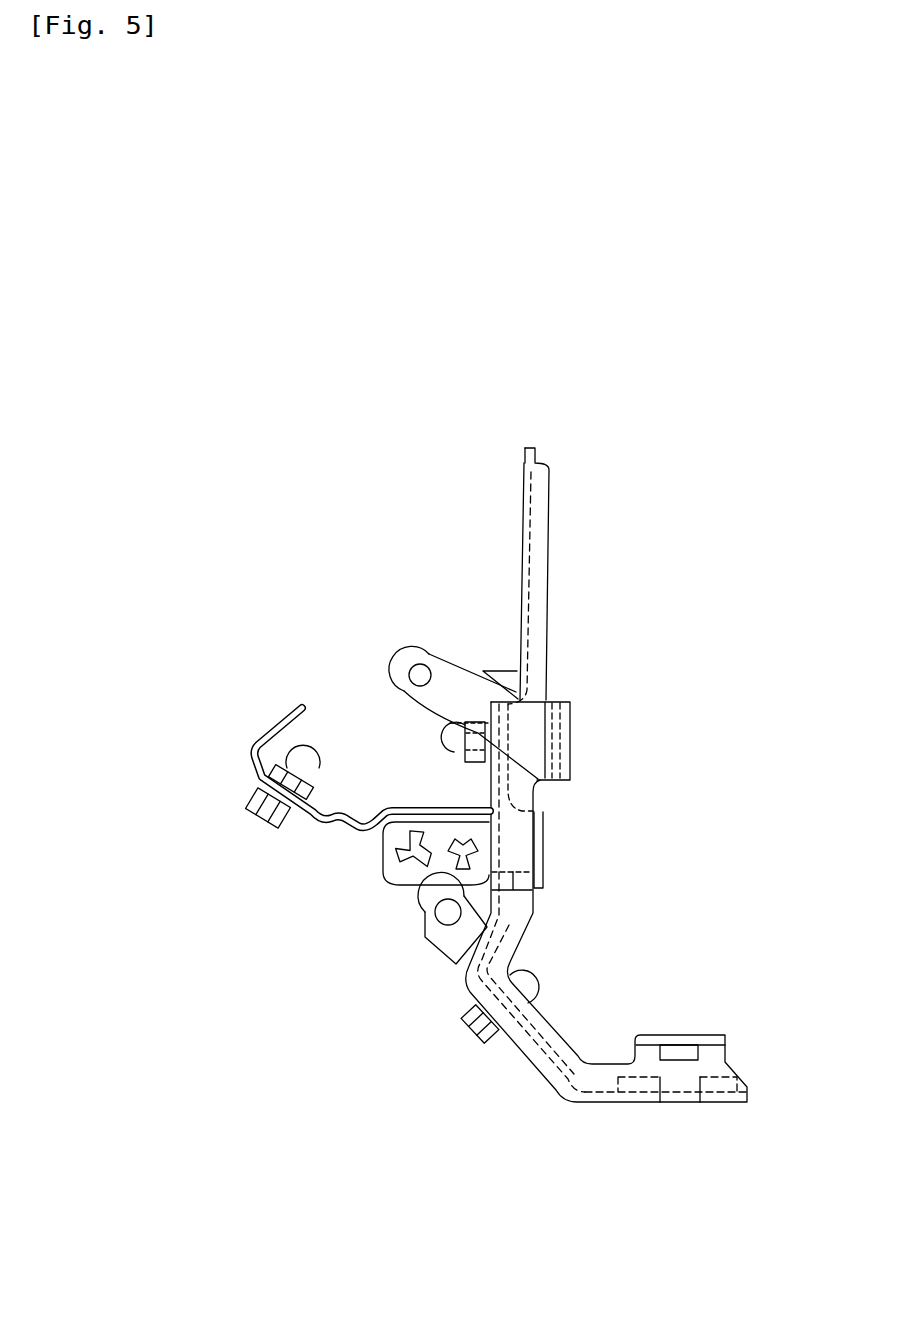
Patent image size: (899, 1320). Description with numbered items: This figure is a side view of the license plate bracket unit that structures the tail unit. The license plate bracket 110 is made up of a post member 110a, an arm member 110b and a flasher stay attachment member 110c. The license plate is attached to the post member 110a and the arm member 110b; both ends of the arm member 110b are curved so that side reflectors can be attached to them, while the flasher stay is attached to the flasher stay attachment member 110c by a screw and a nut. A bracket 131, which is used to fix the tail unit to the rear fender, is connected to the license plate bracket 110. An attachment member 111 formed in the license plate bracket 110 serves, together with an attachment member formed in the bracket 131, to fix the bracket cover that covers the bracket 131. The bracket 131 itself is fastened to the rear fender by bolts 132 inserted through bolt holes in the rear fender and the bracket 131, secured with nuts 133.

The license plate bracket 110 is at (605, 775).
The post member 110a is at (533, 647).
The arm member 110b is at (442, 667).
The flasher stay attachment member 110c is at (713, 1056).
The attachment member 111 is at (433, 932).
The bracket 131 is at (330, 826).
The bolt 132 is at (530, 972).
The nut 133 is at (467, 1040).